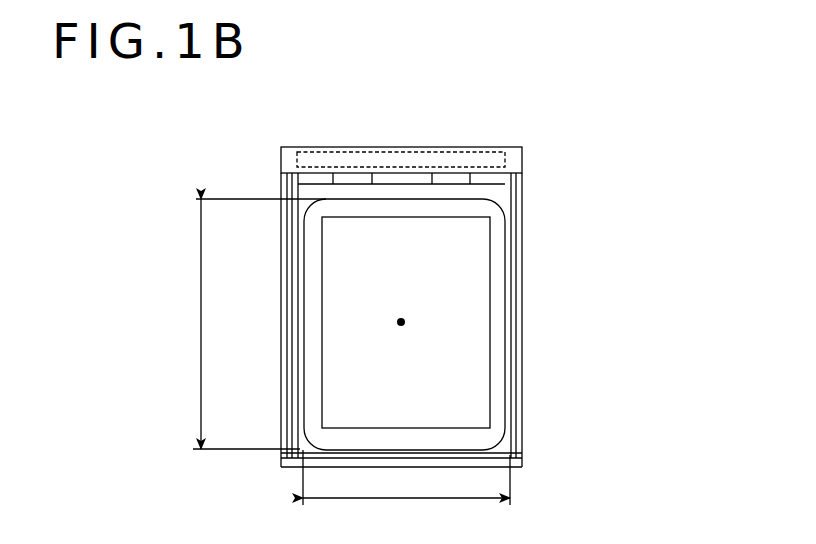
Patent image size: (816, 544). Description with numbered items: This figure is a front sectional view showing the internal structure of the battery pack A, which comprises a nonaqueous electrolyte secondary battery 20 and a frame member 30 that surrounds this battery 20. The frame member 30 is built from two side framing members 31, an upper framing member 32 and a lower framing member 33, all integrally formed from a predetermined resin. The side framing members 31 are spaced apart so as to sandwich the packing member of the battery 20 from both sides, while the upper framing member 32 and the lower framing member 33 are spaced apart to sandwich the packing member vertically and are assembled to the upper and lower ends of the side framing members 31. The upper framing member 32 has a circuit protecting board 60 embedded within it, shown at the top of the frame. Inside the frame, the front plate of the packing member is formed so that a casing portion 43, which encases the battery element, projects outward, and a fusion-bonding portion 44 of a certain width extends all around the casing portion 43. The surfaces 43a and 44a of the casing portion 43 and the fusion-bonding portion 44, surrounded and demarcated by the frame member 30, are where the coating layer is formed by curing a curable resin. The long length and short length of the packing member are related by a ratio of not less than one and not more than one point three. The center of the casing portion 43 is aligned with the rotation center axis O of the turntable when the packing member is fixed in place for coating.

The battery pack A is at (265, 167).
The nonaqueous electrolyte secondary battery 20 is at (357, 197).
The frame member 30 is at (528, 468).
The side framing member 31 is at (280, 388).
The upper framing member 32 is at (443, 147).
The lower framing member 33 is at (522, 460).
The casing portion 43 is at (500, 330).
The surface of the casing portion 43a is at (477, 280).
The fusion-bonding portion 44 is at (505, 212).
The surface of the fusion-bonding portion 44a is at (472, 208).
The circuit protecting board 60 is at (497, 160).
The rotation center axis O is at (398, 322).